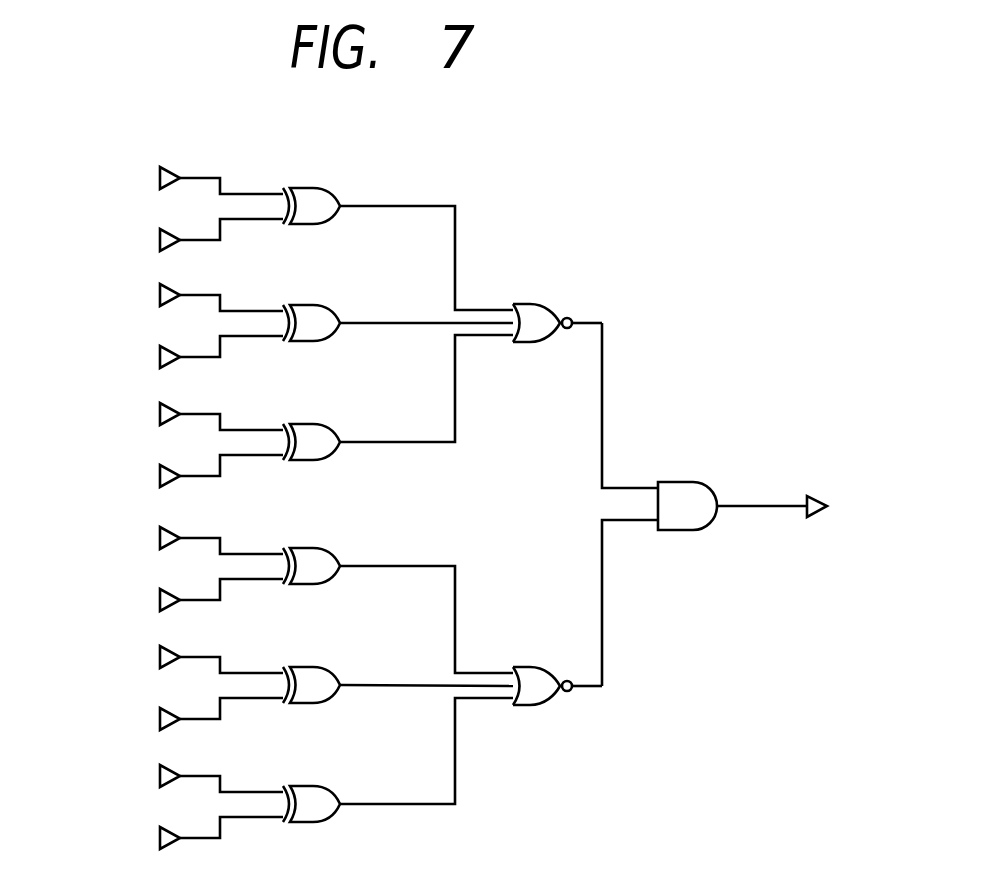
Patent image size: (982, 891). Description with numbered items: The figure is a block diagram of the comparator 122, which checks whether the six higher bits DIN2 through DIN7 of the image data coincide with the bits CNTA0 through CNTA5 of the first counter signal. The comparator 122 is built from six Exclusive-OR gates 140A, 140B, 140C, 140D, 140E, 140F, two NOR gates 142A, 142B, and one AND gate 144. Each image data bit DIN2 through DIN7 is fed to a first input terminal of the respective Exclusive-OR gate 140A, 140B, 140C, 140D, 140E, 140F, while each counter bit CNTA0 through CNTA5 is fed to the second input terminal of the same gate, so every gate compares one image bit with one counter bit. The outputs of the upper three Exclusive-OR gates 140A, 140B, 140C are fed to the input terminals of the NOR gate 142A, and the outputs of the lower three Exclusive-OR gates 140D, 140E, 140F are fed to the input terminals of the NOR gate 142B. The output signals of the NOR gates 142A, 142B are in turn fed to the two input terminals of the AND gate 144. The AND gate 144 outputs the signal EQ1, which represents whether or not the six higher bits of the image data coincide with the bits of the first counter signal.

The comparator 122 is at (439, 501).
The Exclusive-OR gate 140A is at (336, 194).
The Exclusive-OR gate 140B is at (336, 311).
The Exclusive-OR gate 140C is at (336, 430).
The Exclusive-OR gate 140D is at (336, 554).
The Exclusive-OR gate 140E is at (336, 673).
The Exclusive-OR gate 140F is at (336, 792).
The NOR gate 142A is at (558, 316).
The NOR gate 142B is at (547, 704).
The AND gate 144 is at (676, 531).